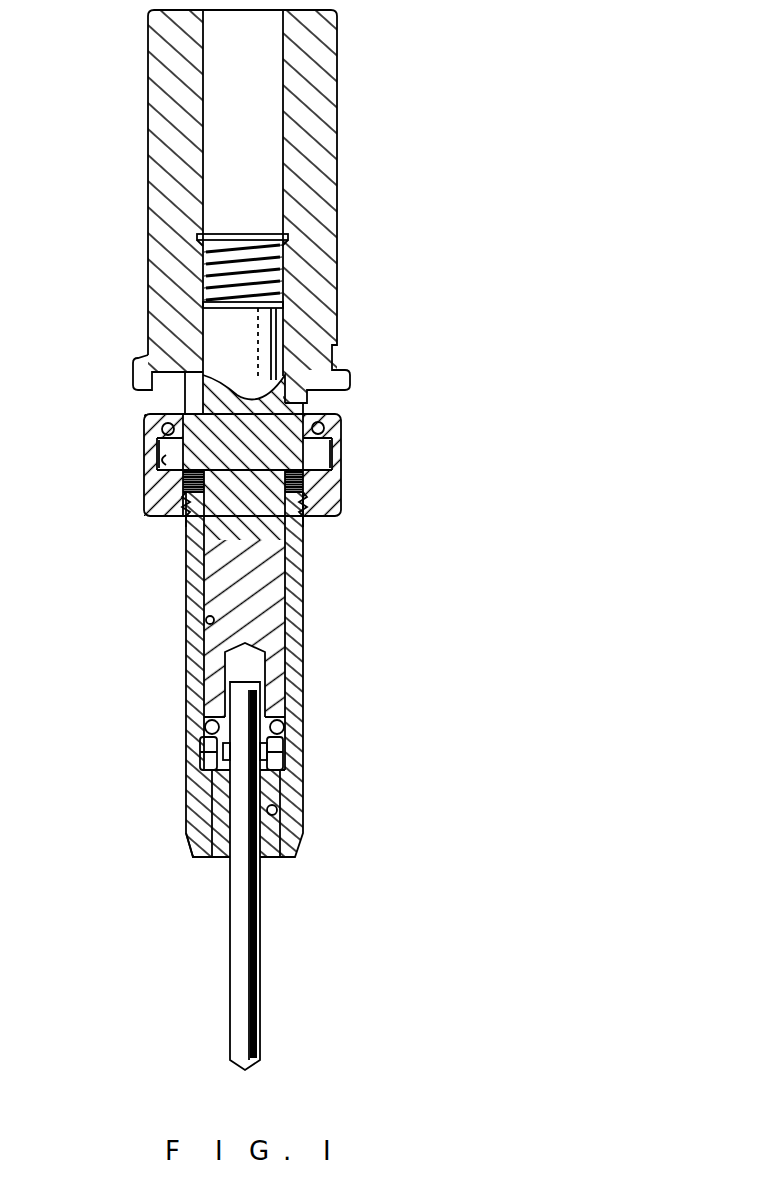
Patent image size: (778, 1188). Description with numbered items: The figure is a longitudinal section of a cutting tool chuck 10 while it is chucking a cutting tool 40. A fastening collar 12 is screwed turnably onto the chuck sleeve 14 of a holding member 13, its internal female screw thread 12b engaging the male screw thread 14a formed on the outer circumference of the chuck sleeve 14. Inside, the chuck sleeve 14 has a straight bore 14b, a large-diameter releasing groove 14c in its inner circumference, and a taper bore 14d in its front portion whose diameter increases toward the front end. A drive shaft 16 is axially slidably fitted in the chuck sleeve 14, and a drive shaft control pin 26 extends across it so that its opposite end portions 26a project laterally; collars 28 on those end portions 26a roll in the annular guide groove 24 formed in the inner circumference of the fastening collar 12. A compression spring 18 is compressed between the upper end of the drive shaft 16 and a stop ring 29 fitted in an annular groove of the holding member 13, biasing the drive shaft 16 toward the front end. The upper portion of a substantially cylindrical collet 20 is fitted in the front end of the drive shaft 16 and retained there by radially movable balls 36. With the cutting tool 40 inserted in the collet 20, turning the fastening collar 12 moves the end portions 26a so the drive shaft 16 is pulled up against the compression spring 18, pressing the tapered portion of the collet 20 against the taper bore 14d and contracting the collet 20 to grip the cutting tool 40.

The cutting tool chuck 10 is at (347, 325).
The fastening collar 12 is at (343, 427).
The female screw thread 12b is at (186, 520).
The holding member 13 is at (337, 210).
The chuck sleeve 14 is at (186, 585).
The male screw thread 14a is at (330, 517).
The straight bore 14b is at (206, 624).
The releasing groove 14c is at (202, 752).
The taper bore 14d is at (277, 810).
The drive shaft 16 is at (262, 583).
The compression spring 18 is at (205, 270).
The collet 20 is at (210, 857).
The annular guide groove 24 is at (163, 469).
The drive shaft control pin 26 is at (307, 403).
The end portions 26a is at (172, 450).
The collars 28 is at (183, 414).
The stop ring 29 is at (198, 236).
The balls 36 is at (207, 723).
The cutting tool 40 is at (262, 963).